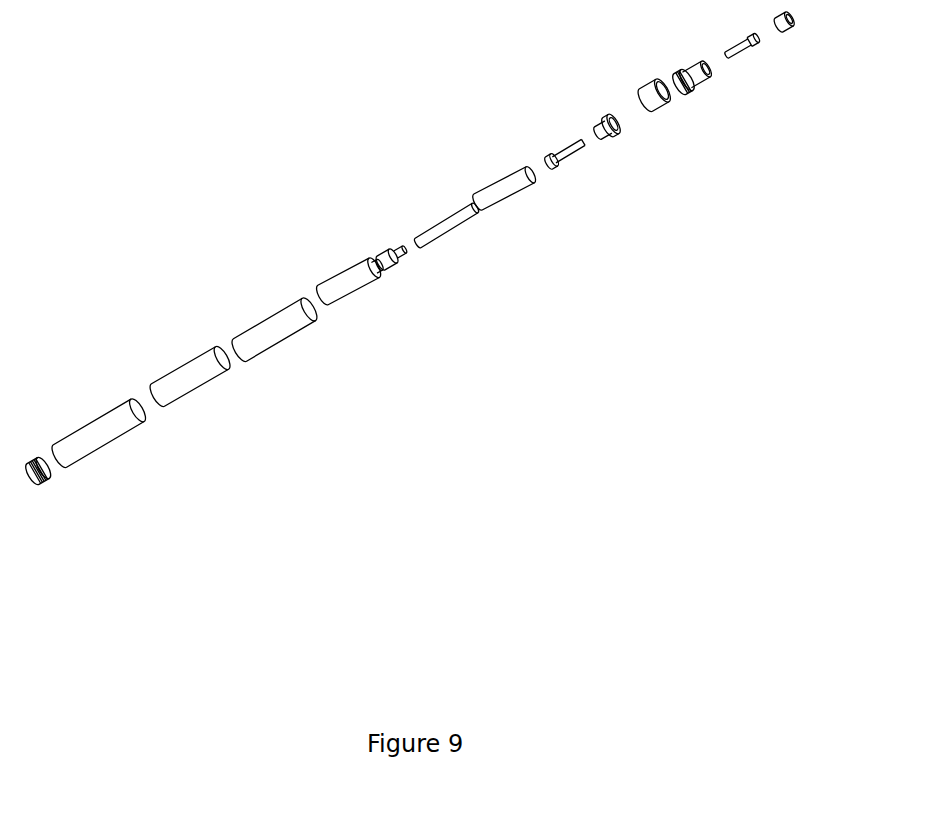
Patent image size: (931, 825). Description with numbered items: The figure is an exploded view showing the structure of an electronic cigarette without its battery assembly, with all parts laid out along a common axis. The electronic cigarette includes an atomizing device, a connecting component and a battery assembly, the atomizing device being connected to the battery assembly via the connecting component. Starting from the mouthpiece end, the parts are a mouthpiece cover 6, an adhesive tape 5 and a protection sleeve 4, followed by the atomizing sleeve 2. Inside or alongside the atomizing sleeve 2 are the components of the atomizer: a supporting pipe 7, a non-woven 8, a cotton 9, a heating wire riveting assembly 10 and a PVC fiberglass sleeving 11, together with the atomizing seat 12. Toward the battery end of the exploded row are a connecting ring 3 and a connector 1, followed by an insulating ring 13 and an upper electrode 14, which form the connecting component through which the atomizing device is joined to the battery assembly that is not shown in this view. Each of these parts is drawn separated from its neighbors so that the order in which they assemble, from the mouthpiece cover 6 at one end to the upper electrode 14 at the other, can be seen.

The connector 1 is at (703, 78).
The atomizing sleeve 2 is at (252, 327).
The connecting ring 3 is at (656, 110).
The protection sleeve 4 is at (178, 388).
The adhesive tape 5 is at (117, 423).
The mouthpiece cover 6 is at (44, 480).
The supporting pipe 7 is at (404, 247).
The non-woven 8 is at (530, 175).
The cotton 9 is at (342, 287).
The heating wire riveting assembly 10 is at (553, 168).
The PVC fiberglass sleeving 11 is at (456, 225).
The atomizing seat 12 is at (612, 137).
The insulating ring 13 is at (745, 45).
The upper electrode 14 is at (788, 28).